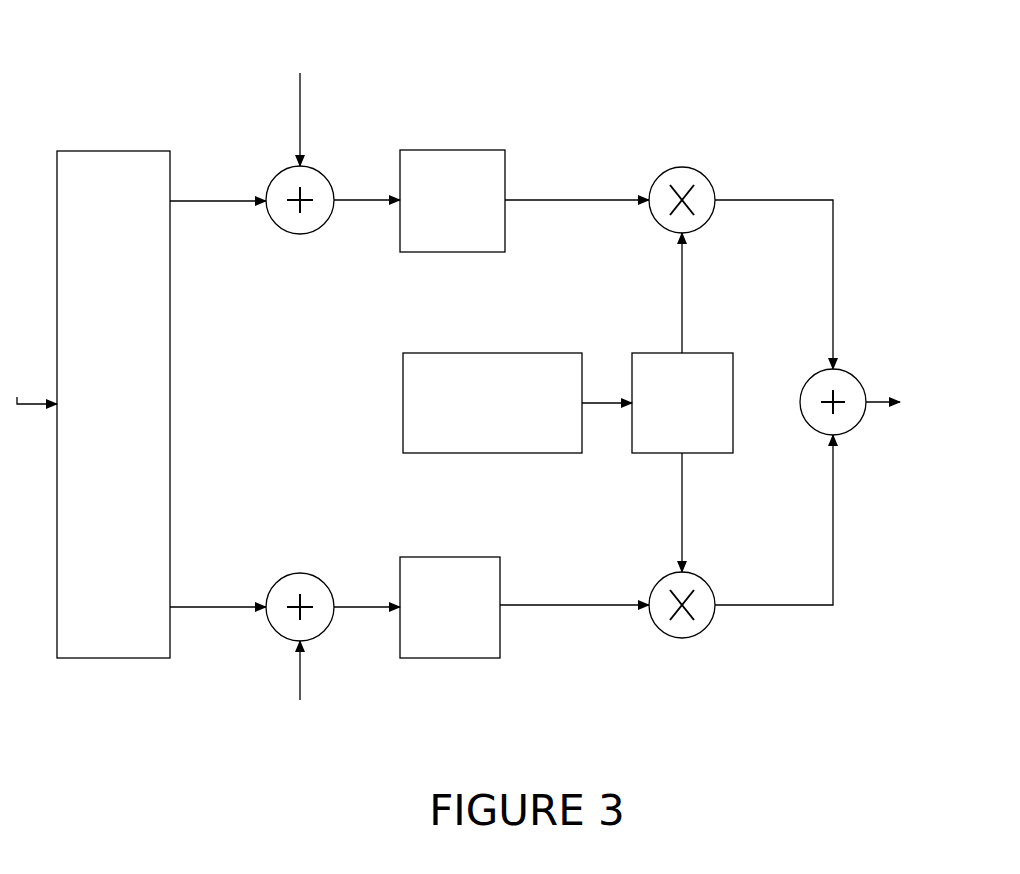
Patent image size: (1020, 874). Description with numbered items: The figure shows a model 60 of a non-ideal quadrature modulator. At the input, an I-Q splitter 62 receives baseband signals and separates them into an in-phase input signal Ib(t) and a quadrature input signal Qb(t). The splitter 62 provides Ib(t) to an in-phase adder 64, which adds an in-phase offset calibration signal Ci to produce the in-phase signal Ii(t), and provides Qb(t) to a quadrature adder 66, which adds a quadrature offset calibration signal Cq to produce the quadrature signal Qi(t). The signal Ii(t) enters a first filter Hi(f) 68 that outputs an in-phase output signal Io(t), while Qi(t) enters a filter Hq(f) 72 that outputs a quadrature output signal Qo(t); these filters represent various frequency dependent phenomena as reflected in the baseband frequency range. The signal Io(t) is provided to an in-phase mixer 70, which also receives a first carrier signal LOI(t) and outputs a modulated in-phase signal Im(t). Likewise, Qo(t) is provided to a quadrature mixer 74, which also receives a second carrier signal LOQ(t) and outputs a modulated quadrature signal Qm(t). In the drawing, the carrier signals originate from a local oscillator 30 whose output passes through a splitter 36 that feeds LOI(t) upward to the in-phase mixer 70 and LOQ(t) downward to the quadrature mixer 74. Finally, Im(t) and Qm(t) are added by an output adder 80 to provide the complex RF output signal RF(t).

The model 60 is at (179, 755).
The I-Q splitter 62 is at (104, 434).
The in-phase adder 64 is at (297, 236).
The quadrature adder 66 is at (300, 573).
The first filter Hi(f) 68 is at (444, 219).
The filter Hq(f) 72 is at (441, 638).
The in-phase mixer 70 is at (681, 150).
The quadrature mixer 74 is at (685, 640).
The local oscillator 30 is at (484, 432).
The splitter 36 is at (674, 421).
The output adder 80 is at (798, 400).